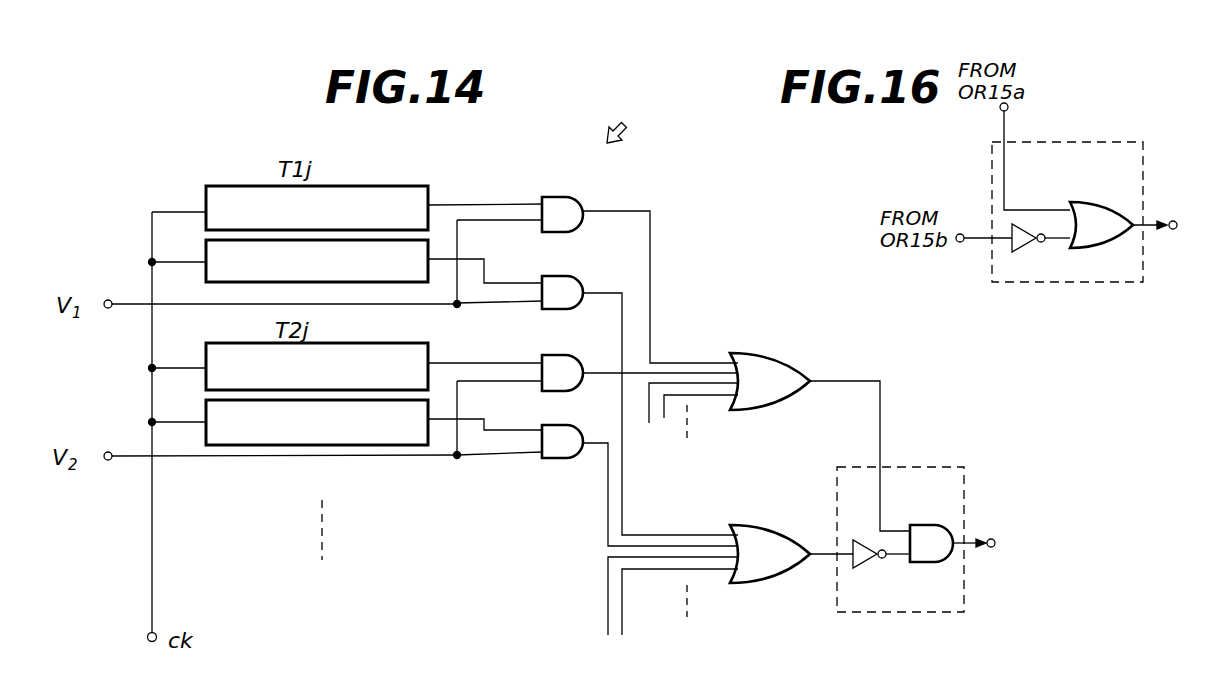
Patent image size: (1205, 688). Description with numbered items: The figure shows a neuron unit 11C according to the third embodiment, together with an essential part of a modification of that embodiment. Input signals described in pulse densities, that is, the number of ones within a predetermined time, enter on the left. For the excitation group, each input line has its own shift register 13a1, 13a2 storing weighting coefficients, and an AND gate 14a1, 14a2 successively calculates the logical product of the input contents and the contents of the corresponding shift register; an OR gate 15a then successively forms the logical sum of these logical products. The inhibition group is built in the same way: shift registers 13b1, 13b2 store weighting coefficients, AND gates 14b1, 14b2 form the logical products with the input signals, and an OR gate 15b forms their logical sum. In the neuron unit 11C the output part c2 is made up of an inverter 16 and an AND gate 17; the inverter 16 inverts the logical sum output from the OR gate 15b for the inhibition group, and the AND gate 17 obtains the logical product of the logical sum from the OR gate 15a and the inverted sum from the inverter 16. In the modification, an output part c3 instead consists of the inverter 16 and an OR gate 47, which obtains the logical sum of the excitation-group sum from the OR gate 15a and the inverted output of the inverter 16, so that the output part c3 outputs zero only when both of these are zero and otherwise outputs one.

In FIG. 14, the neuron unit 11C is at (635, 117).
In FIG. 14, the shift register 13a1 is at (372, 185).
In FIG. 14, the shift register 13b1 is at (206, 250).
In FIG. 14, the shift register 13a2 is at (206, 355).
In FIG. 14, the shift register 13b2 is at (206, 438).
In FIG. 14, the AND gate 14a1 is at (558, 196).
In FIG. 14, the AND gate 14b1 is at (558, 276).
In FIG. 14, the AND gate 14a2 is at (558, 355).
In FIG. 14, the AND gate 14b2 is at (562, 460).
In FIG. 14, the OR gate 15a is at (760, 352).
In FIG. 14, the OR gate 15b is at (762, 525).
In FIG. 14, the inverter 16 is at (866, 563).
In FIG. 16, the inverter 16 is at (1022, 244).
In FIG. 14, the AND gate 17 is at (928, 525).
In FIG. 14, the output part c2 is at (905, 466).
In FIG. 16, the output part c3 is at (1090, 140).
In FIG. 16, the OR gate 47 is at (1095, 202).